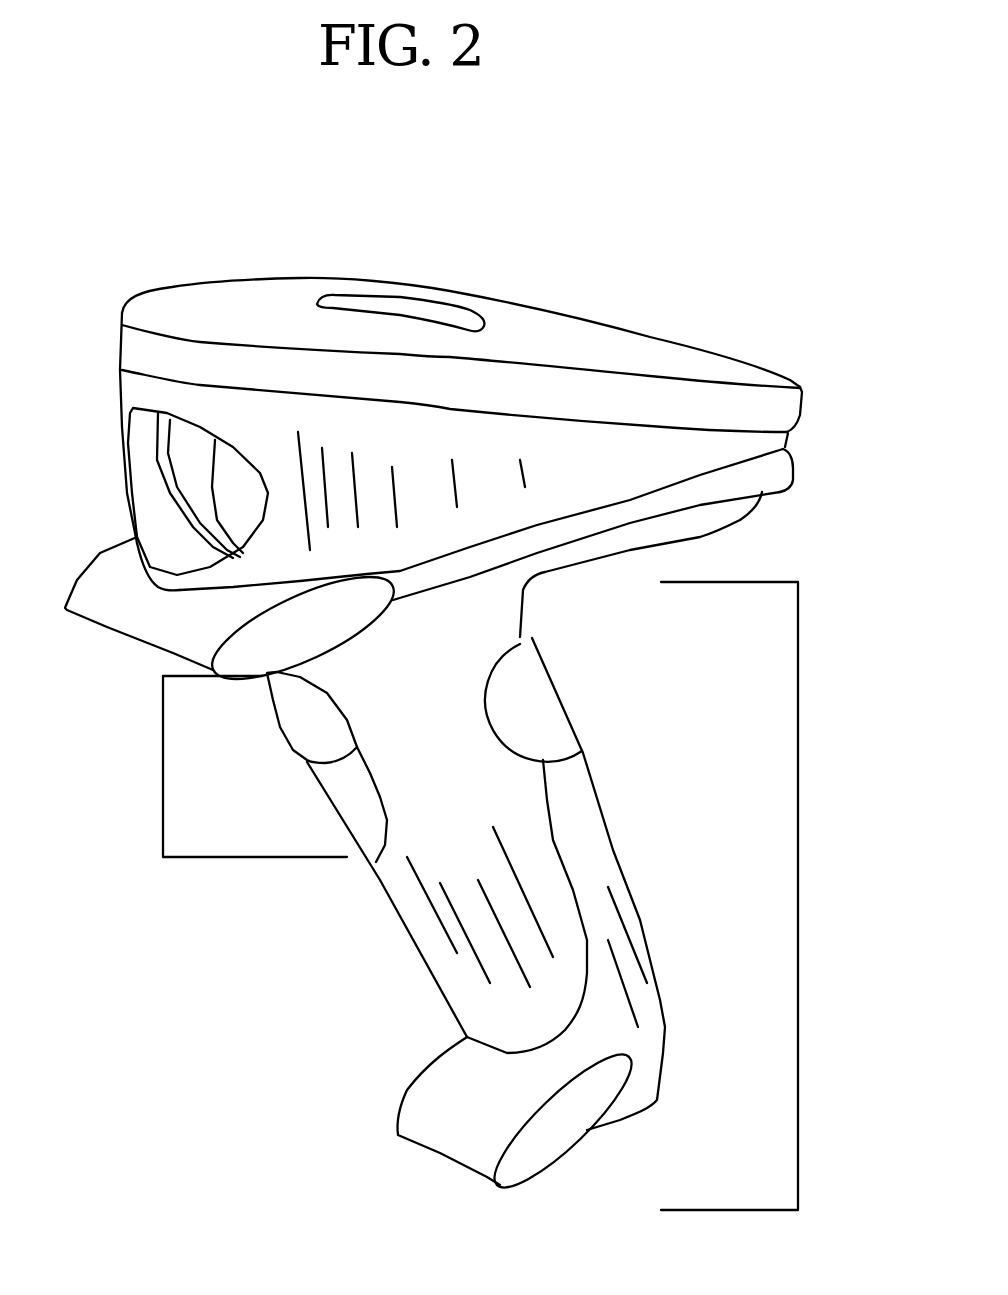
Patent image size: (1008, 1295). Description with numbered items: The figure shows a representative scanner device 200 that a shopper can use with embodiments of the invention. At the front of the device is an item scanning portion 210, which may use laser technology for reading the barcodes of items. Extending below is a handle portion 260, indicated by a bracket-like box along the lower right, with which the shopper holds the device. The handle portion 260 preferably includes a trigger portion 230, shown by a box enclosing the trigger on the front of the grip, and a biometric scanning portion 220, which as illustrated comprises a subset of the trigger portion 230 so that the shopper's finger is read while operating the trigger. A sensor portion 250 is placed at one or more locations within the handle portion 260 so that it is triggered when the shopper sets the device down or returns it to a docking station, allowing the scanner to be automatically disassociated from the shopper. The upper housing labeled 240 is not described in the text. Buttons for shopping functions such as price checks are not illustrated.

The scanner device 200 is at (133, 202).
The item scanning portion 210 is at (122, 488).
The biometric scanning portion 220 is at (288, 702).
The trigger portion 230 is at (163, 738).
The housing 240 is at (588, 333).
The sensor portion 250 is at (555, 687).
The handle portion 260 is at (798, 865).